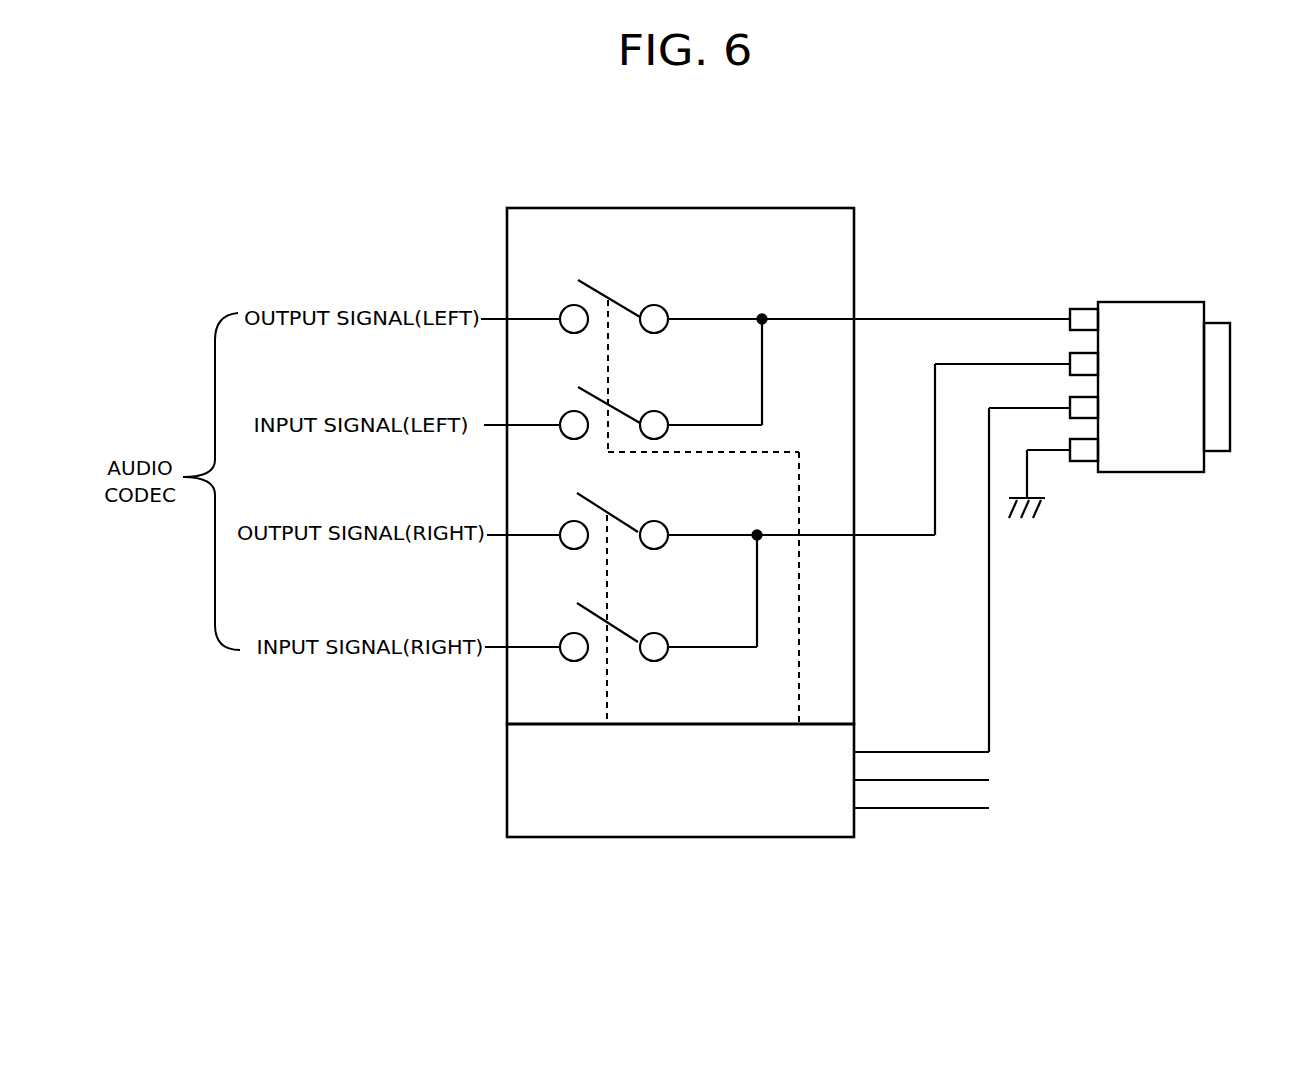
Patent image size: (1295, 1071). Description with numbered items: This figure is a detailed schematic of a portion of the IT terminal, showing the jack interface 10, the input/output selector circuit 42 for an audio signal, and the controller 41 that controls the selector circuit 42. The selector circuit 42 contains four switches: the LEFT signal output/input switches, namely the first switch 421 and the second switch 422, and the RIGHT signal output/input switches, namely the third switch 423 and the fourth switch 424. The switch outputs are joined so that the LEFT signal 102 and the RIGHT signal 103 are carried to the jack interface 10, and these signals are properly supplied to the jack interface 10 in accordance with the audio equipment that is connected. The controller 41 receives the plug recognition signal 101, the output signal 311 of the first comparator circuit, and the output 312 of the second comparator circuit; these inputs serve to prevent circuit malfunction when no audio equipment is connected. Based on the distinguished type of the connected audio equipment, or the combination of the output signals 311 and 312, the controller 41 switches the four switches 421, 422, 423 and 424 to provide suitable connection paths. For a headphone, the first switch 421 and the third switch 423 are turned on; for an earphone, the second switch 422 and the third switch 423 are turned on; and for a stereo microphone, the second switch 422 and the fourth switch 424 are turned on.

The jack interface 10 is at (1152, 472).
The controller 41 is at (668, 840).
The input/output selector circuit 42 is at (725, 208).
The switch SW-A 421 is at (633, 266).
The switch SW-B 422 is at (633, 372).
The switch SW-C 423 is at (641, 481).
The switch SW-D 424 is at (640, 592).
The plug recognition signal 101 is at (882, 752).
The LEFT signal 102 is at (938, 321).
The RIGHT signal 103 is at (898, 537).
The output signal of the first comparator circuit 311 is at (943, 781).
The output of the second comparator circuit 312 is at (885, 809).